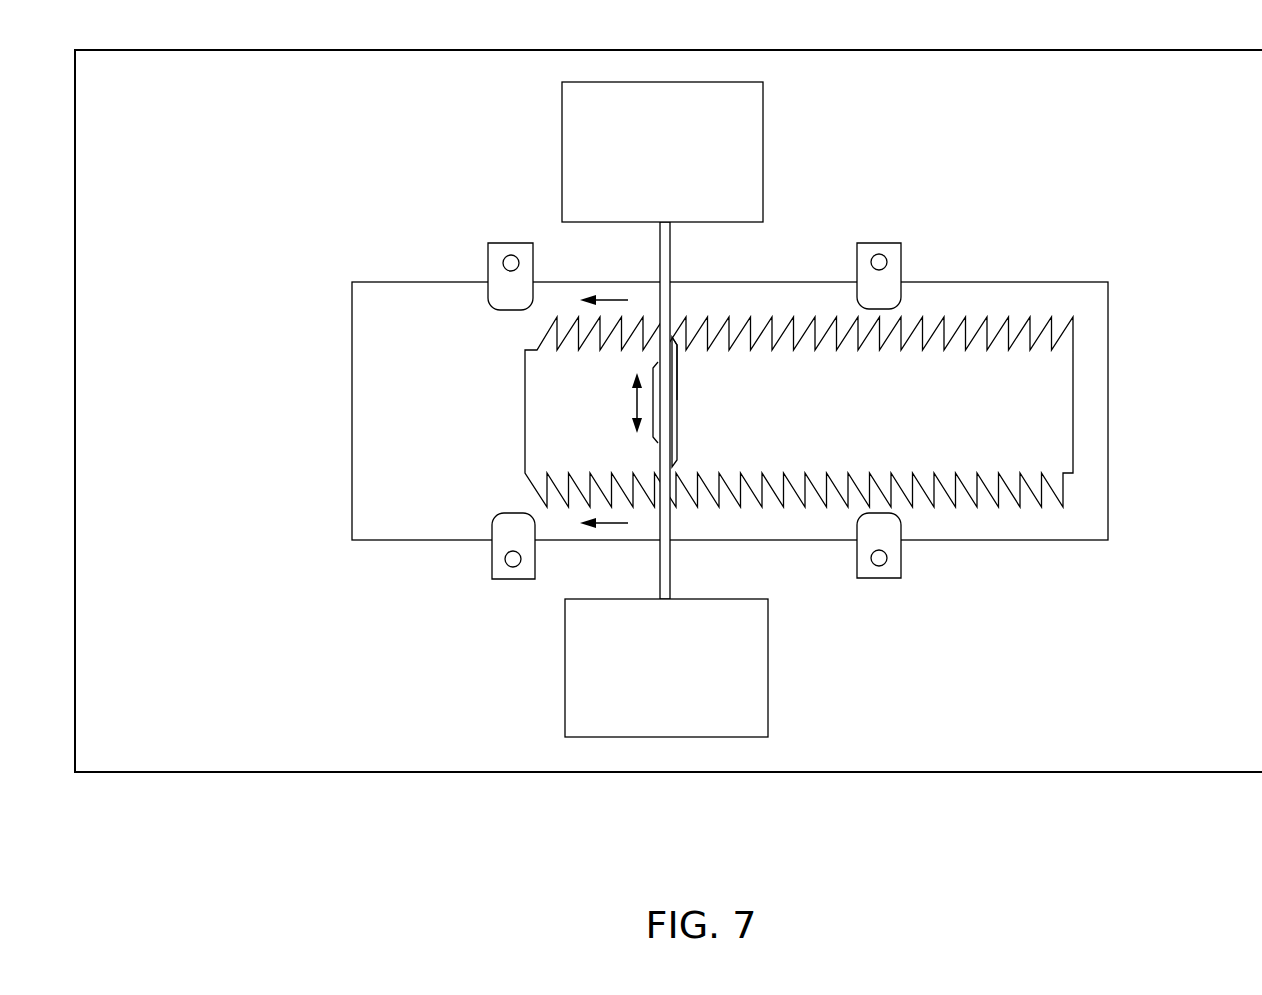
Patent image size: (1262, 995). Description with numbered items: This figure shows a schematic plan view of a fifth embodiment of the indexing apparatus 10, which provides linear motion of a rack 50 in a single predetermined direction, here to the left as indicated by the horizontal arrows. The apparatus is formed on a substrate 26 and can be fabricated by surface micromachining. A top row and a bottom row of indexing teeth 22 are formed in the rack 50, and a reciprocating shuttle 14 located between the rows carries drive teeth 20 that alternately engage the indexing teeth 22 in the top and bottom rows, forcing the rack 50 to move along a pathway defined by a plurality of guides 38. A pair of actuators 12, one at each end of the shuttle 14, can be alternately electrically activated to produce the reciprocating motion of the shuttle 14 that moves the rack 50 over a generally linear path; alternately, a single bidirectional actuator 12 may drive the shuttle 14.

The indexing apparatus 10 is at (1007, 795).
The actuator 12 is at (649, 177).
The reciprocating shuttle 14 is at (677, 405).
The drive teeth 20 is at (677, 351).
The indexing teeth 22 is at (799, 412).
The substrate 26 is at (122, 733).
The guides 38 is at (503, 243).
The rack 50 is at (429, 422).